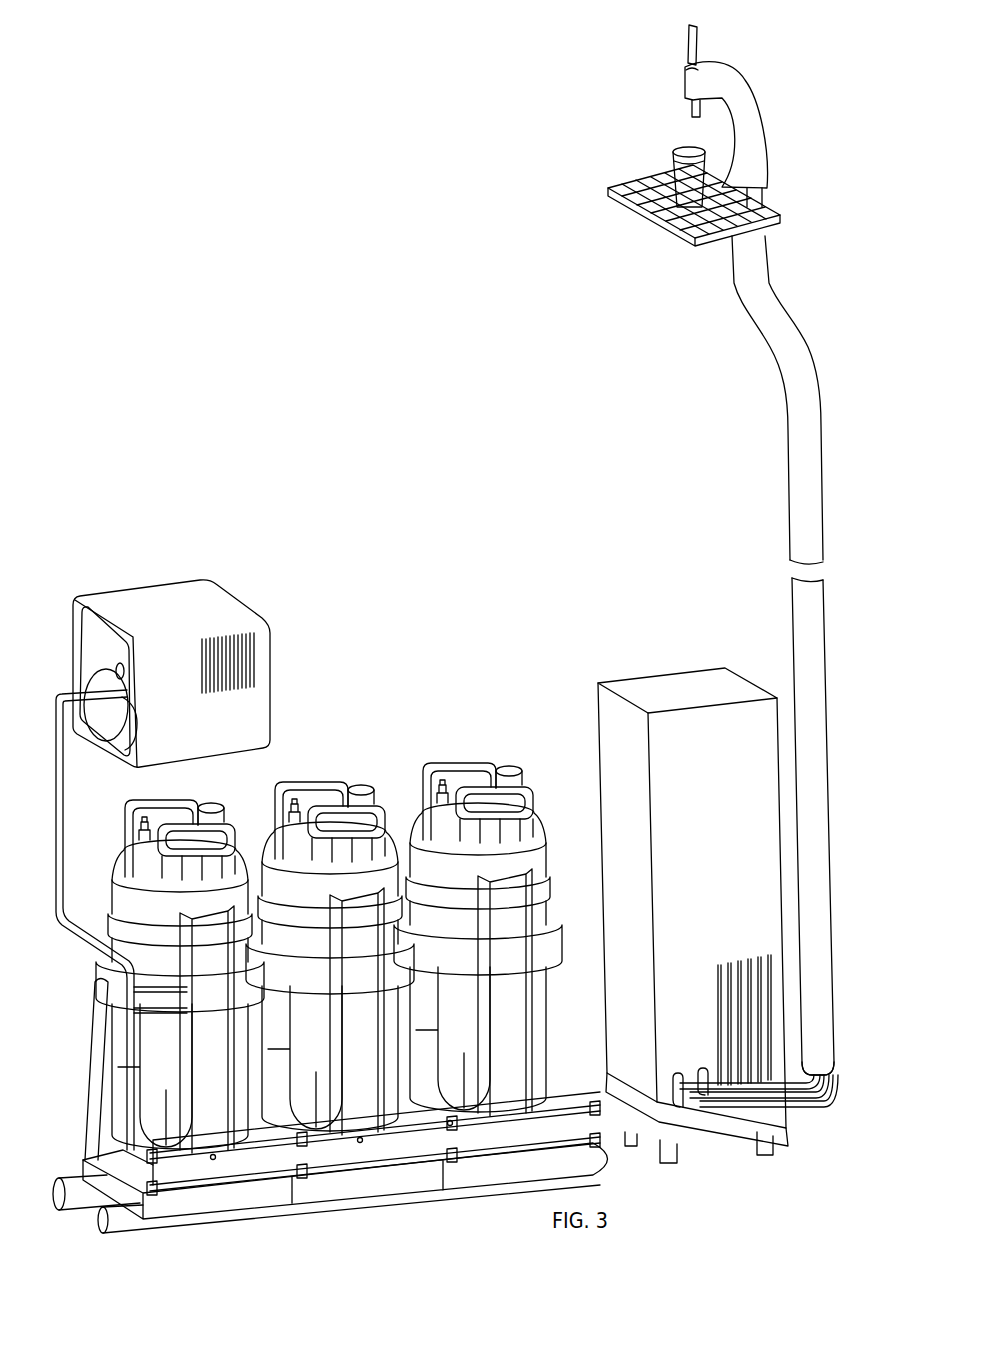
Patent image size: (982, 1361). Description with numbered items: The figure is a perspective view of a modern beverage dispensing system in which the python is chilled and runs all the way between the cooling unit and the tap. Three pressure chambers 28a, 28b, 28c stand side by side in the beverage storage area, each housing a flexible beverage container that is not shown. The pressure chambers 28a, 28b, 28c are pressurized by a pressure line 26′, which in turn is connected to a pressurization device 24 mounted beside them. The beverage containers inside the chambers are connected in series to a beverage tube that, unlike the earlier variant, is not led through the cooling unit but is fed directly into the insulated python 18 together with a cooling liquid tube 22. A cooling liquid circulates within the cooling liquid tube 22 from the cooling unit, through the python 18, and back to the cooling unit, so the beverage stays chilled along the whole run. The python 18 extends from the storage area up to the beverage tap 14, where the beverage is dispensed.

The beverage tap 14 is at (723, 78).
The insulated python 18 is at (800, 460).
The cooling liquid tube 22 is at (803, 1106).
The pressurization device 24 is at (208, 603).
The pressure line 26′ is at (55, 697).
The pressure chamber 28a is at (235, 840).
The pressure chamber 28b is at (395, 838).
The pressure chamber 28c is at (538, 812).